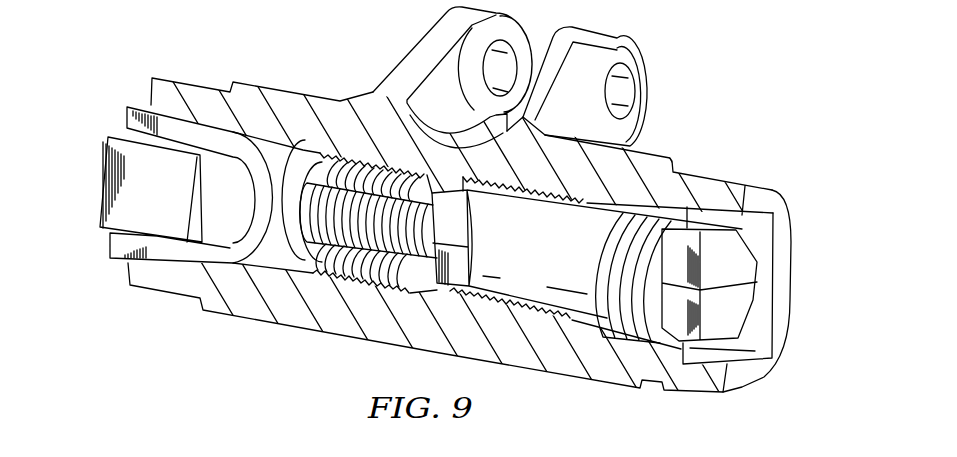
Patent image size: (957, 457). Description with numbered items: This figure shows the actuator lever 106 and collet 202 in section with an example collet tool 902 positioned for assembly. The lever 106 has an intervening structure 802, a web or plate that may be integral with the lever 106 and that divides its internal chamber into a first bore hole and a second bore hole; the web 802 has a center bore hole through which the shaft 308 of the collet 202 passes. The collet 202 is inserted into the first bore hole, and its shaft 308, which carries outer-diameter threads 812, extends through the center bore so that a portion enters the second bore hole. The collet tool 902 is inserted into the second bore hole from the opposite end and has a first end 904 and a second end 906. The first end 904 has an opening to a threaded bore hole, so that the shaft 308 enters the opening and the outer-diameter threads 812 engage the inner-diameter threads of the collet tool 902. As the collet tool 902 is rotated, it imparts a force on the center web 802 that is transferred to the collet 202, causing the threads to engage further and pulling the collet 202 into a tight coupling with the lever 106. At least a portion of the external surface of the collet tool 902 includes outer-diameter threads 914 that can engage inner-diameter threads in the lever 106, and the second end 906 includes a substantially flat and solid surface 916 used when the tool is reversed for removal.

The lever 106 is at (610, 388).
The collet 202 is at (97, 171).
The shaft 308 is at (347, 145).
The outer-diameter threads 812 is at (298, 182).
The intervening structure 802 is at (418, 170).
The collet tool 902 is at (764, 246).
The first end 904 is at (457, 217).
The second end 906 is at (774, 291).
The flat and solid surface 916 is at (740, 302).
The outer-diameter threads 914 is at (617, 250).